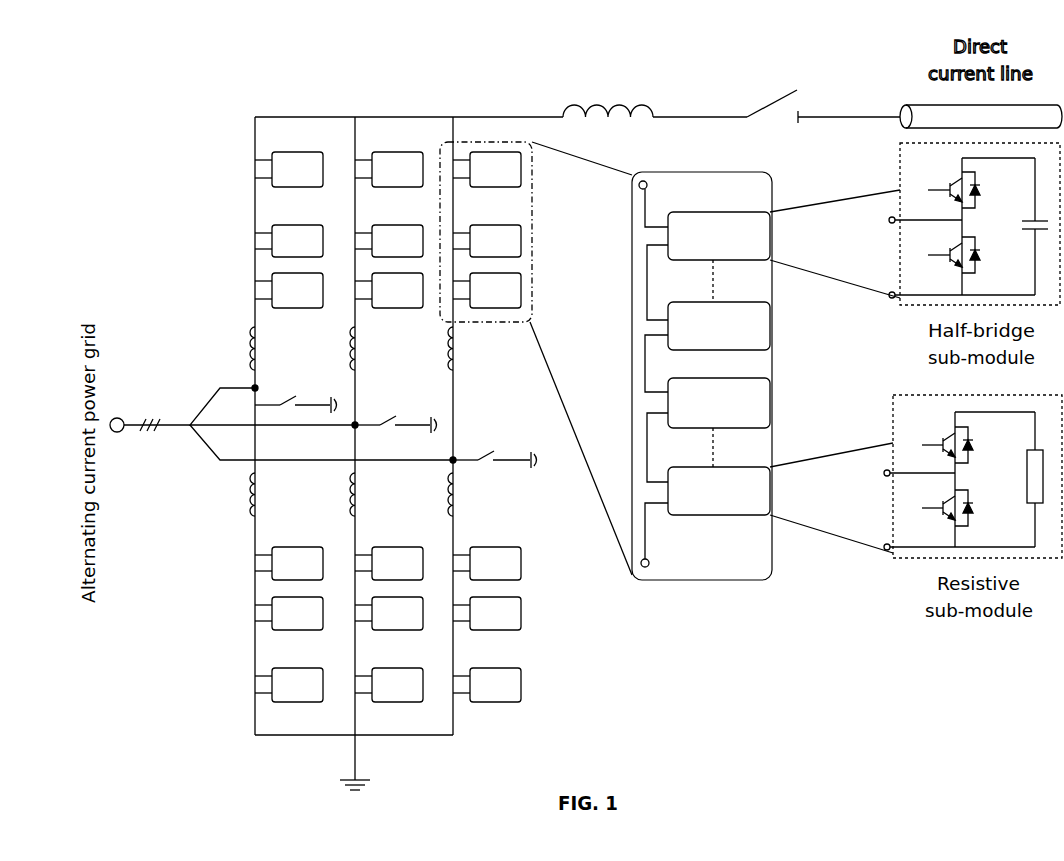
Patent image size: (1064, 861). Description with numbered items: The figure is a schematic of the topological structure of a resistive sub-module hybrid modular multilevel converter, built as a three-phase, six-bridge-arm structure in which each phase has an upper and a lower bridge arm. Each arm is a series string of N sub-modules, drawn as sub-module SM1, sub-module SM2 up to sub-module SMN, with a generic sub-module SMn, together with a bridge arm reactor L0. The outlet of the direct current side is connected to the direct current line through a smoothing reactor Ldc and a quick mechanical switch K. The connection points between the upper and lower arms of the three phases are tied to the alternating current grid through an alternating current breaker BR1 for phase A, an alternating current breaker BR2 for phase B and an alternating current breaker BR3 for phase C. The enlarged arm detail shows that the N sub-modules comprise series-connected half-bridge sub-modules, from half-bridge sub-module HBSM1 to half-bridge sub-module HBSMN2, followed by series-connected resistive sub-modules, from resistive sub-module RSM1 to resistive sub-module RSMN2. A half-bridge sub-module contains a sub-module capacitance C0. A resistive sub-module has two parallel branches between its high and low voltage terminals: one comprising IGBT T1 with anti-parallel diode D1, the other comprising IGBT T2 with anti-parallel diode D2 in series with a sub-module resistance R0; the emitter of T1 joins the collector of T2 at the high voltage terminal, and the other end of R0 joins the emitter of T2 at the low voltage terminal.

The smoothing reactor Ldc is at (600, 71).
The quick mechanical switch K is at (769, 74).
The sub-module N SMN is at (388, 366).
The sub-module 2 SM2 is at (388, 427).
The sub-module 1 SM1 is at (388, 290).
The sub-module n SMn is at (388, 685).
The bridge arm reactor L0 is at (363, 421).
The alternating current breaker BR1 is at (296, 391).
The alternating current breaker BR2 is at (396, 411).
The alternating current breaker BR3 is at (495, 450).
The half-bridge sub-module HBSM1 is at (719, 236).
The half-bridge sub-module HBSMN2 is at (719, 326).
The resistive sub-module RSM1 is at (719, 403).
The resistive sub-module RSMN2 is at (719, 491).
The sub-module capacitance C0 is at (1020, 226).
The sub-module resistance R0 is at (1021, 479).
The IGBT T1 is at (935, 437).
The IGBT T2 is at (935, 519).
The anti-parallel diode D1 is at (977, 445).
The anti-parallel diode D2 is at (977, 511).